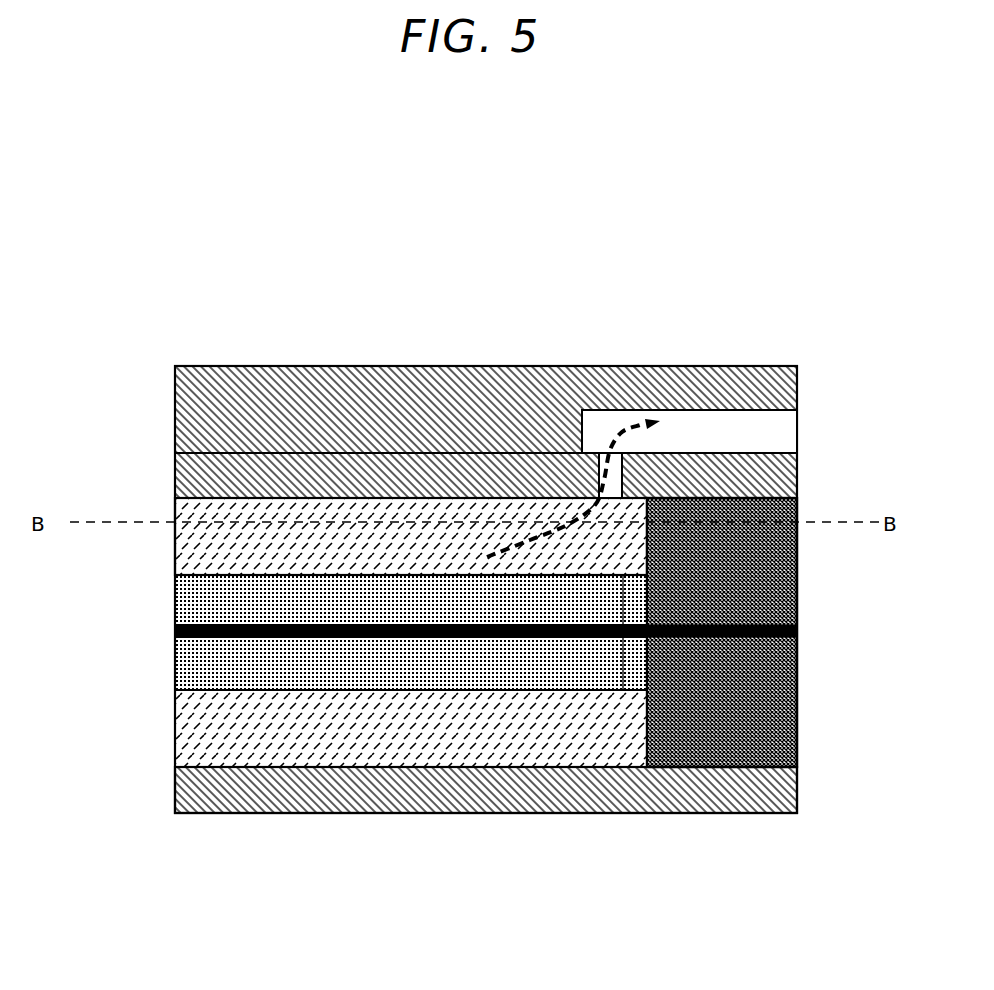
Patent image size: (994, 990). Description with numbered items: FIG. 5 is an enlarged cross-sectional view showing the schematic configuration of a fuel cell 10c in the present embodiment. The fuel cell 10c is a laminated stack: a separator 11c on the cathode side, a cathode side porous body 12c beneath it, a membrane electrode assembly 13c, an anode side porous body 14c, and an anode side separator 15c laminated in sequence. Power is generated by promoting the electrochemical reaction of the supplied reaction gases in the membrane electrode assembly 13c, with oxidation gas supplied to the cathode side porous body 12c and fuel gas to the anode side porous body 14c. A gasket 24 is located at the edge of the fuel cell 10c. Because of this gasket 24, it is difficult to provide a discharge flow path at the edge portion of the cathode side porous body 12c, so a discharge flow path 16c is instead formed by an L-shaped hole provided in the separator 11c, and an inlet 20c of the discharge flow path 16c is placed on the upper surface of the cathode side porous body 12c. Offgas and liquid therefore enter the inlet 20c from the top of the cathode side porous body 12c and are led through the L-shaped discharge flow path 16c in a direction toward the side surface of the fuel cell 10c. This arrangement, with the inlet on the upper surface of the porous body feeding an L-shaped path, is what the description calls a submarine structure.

The fuel cell 10c is at (645, 280).
The separator 11c is at (203, 405).
The cathode side porous body 12c is at (287, 530).
The membrane electrode assembly 13c is at (423, 587).
The anode side porous body 14c is at (375, 710).
The anode side separator 15c is at (525, 787).
The discharge flow path 16c is at (712, 420).
The inlet 20c is at (657, 567).
The gasket 24 is at (780, 550).